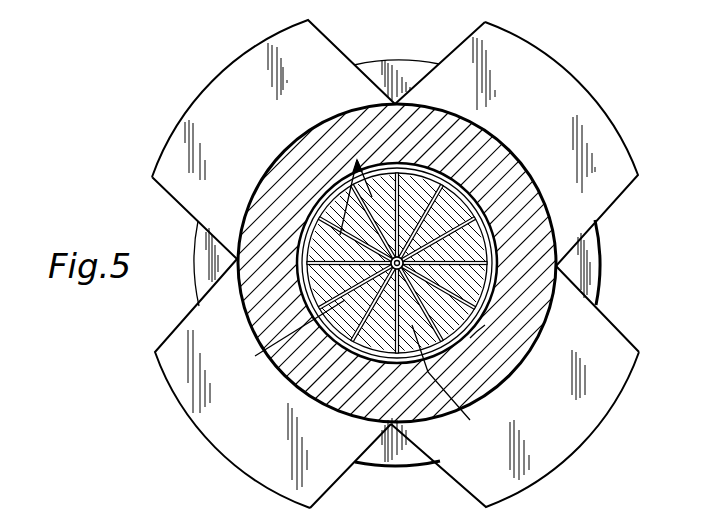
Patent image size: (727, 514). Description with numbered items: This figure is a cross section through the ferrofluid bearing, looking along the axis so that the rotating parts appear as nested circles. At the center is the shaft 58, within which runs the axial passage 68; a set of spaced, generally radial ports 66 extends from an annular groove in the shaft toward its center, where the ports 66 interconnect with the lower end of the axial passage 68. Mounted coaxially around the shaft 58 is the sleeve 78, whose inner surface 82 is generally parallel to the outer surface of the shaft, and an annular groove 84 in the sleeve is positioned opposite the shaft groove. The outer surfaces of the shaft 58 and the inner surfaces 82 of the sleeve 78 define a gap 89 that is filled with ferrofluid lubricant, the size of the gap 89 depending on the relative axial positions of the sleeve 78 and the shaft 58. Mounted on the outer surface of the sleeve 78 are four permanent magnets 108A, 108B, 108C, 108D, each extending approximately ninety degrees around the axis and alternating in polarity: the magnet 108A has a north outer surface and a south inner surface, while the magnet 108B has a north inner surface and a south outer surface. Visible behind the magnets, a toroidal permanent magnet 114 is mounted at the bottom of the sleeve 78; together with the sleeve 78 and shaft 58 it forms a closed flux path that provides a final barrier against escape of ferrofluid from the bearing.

The shaft 58 is at (500, 266).
The radial ports 66 is at (353, 288).
The axial passage 68 is at (442, 222).
The sleeve 78 is at (302, 135).
The inner surface of sleeve 82 is at (493, 197).
The annular groove 84 is at (497, 195).
The gap 89 is at (485, 325).
The permanent magnet 108A is at (553, 58).
The permanent magnet 108B is at (243, 48).
The permanent magnet 108C is at (165, 378).
The permanent magnet 108D is at (630, 376).
The toroidal permanent magnet 114 is at (418, 63).